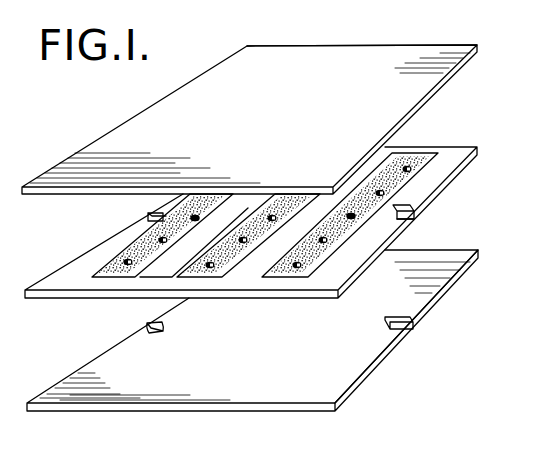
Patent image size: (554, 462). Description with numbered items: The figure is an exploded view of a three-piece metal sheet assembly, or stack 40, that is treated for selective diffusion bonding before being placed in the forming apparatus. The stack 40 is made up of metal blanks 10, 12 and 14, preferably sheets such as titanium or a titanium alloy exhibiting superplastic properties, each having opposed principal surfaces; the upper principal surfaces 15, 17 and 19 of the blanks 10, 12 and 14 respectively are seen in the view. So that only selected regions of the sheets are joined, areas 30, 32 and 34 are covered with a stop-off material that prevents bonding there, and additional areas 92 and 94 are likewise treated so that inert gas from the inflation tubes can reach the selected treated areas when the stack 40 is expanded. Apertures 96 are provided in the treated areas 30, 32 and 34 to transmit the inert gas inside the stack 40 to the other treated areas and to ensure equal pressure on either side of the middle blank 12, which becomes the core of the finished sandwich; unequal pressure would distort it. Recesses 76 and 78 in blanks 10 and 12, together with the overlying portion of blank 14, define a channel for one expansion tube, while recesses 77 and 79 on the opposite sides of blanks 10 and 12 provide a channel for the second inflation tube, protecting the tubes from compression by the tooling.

The metal blank 10 is at (447, 285).
The metal blank 12 is at (376, 249).
The metal blank 14 is at (430, 97).
The upper principal surface 15 is at (337, 383).
The upper principal surface 17 is at (243, 278).
The upper principal surface 19 is at (292, 55).
The treated area 30 is at (305, 264).
The treated area 32 is at (186, 266).
The treated area 34 is at (106, 272).
The stack 40 is at (488, 272).
The recess 76 is at (147, 328).
The recess 77 is at (412, 325).
The recess 78 is at (148, 217).
The recess 79 is at (403, 222).
The treated area 92 is at (393, 206).
The treated area 94 is at (168, 220).
The apertures 96 is at (352, 208).